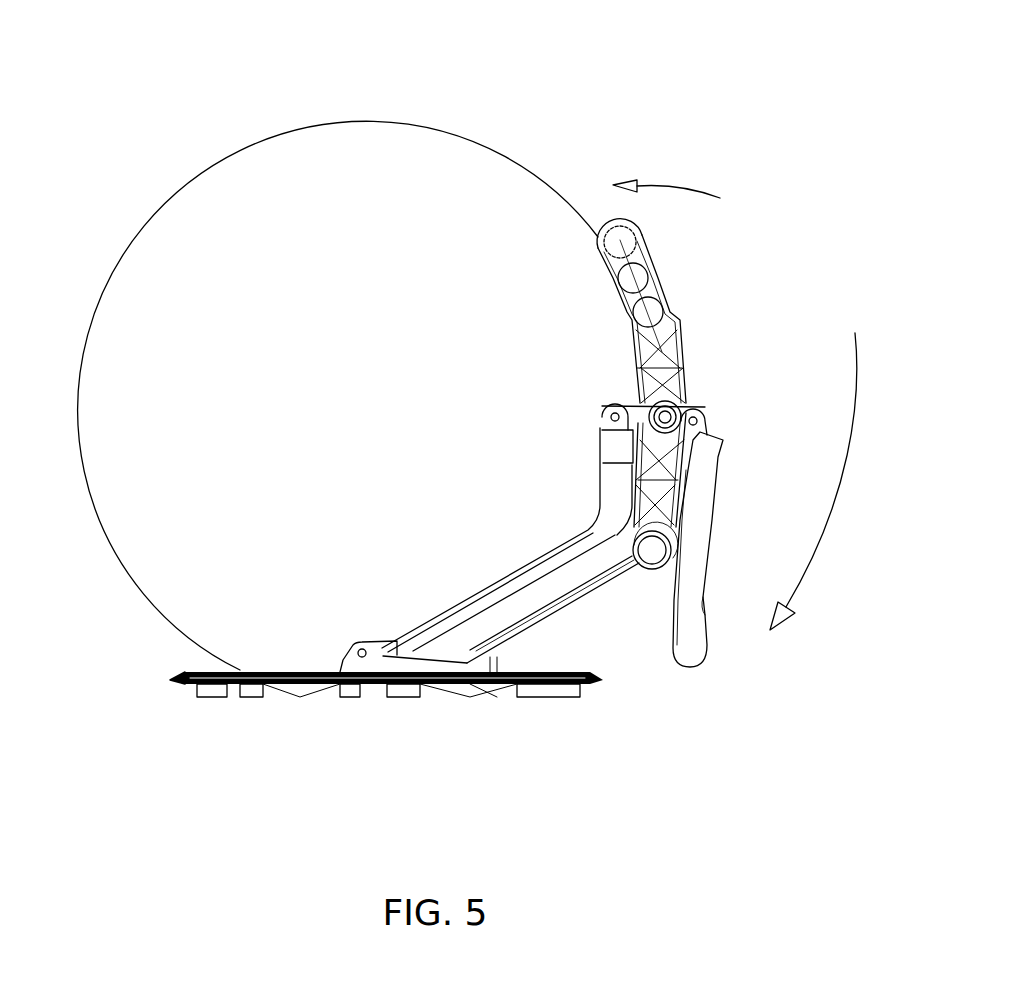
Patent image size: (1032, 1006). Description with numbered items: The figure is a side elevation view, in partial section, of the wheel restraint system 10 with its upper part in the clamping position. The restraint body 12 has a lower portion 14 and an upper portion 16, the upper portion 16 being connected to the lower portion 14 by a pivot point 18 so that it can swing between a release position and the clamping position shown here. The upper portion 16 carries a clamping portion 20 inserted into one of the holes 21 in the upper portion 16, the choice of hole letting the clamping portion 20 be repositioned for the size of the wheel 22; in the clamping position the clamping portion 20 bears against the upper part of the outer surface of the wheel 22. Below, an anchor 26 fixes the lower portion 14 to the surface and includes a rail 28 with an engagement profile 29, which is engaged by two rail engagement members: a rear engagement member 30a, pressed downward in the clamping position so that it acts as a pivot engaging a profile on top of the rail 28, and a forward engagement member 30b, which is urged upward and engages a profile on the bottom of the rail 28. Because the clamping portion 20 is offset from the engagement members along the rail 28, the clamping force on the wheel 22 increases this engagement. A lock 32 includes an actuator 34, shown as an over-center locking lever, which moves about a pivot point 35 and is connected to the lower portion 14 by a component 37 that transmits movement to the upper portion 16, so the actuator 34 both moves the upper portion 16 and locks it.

The wheel restraint system 10 is at (173, 150).
The restraint body 12 is at (608, 223).
The lower portion 14 is at (457, 607).
The upper portion 16 is at (685, 325).
The pivot point 18 is at (643, 580).
The clamping portion 20 is at (621, 238).
The holes 21 is at (633, 278).
The wheel 22 is at (432, 127).
The anchor 26 is at (232, 695).
The rail 28 is at (180, 677).
The engagement profile 29 is at (300, 670).
The rear engagement member 30a is at (517, 660).
The forward engagement member 30b is at (345, 694).
The lock 32 is at (712, 510).
The actuator 34 is at (703, 592).
The pivot point 35 is at (672, 405).
The component 37 is at (700, 418).